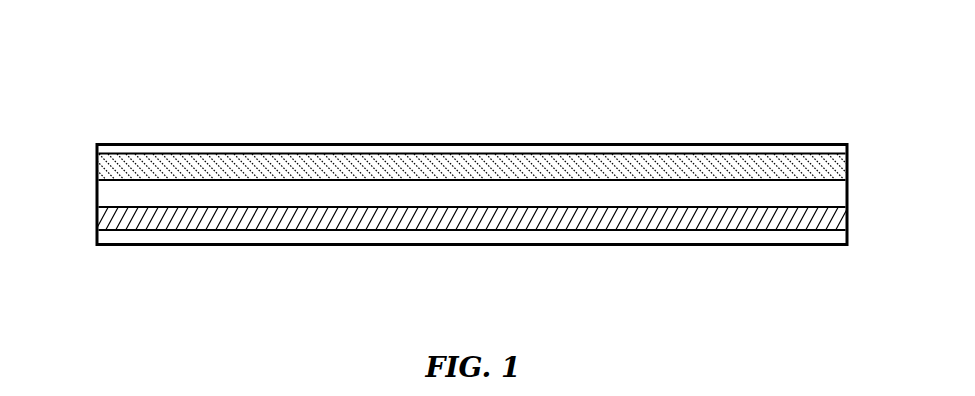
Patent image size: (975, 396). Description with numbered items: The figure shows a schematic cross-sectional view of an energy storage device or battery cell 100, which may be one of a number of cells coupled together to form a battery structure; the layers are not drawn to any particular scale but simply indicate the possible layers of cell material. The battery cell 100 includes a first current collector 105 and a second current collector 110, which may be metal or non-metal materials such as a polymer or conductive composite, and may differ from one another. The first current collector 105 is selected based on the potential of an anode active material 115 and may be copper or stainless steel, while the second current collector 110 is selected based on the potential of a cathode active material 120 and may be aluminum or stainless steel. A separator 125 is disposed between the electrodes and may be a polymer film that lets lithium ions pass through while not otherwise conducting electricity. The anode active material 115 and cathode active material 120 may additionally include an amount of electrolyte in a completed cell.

The battery cell 100 is at (224, 80).
The first current collector 105 is at (303, 246).
The second current collector 110 is at (697, 143).
The anode active material 115 is at (96, 209).
The cathode active material 120 is at (849, 163).
The separator 125 is at (849, 199).